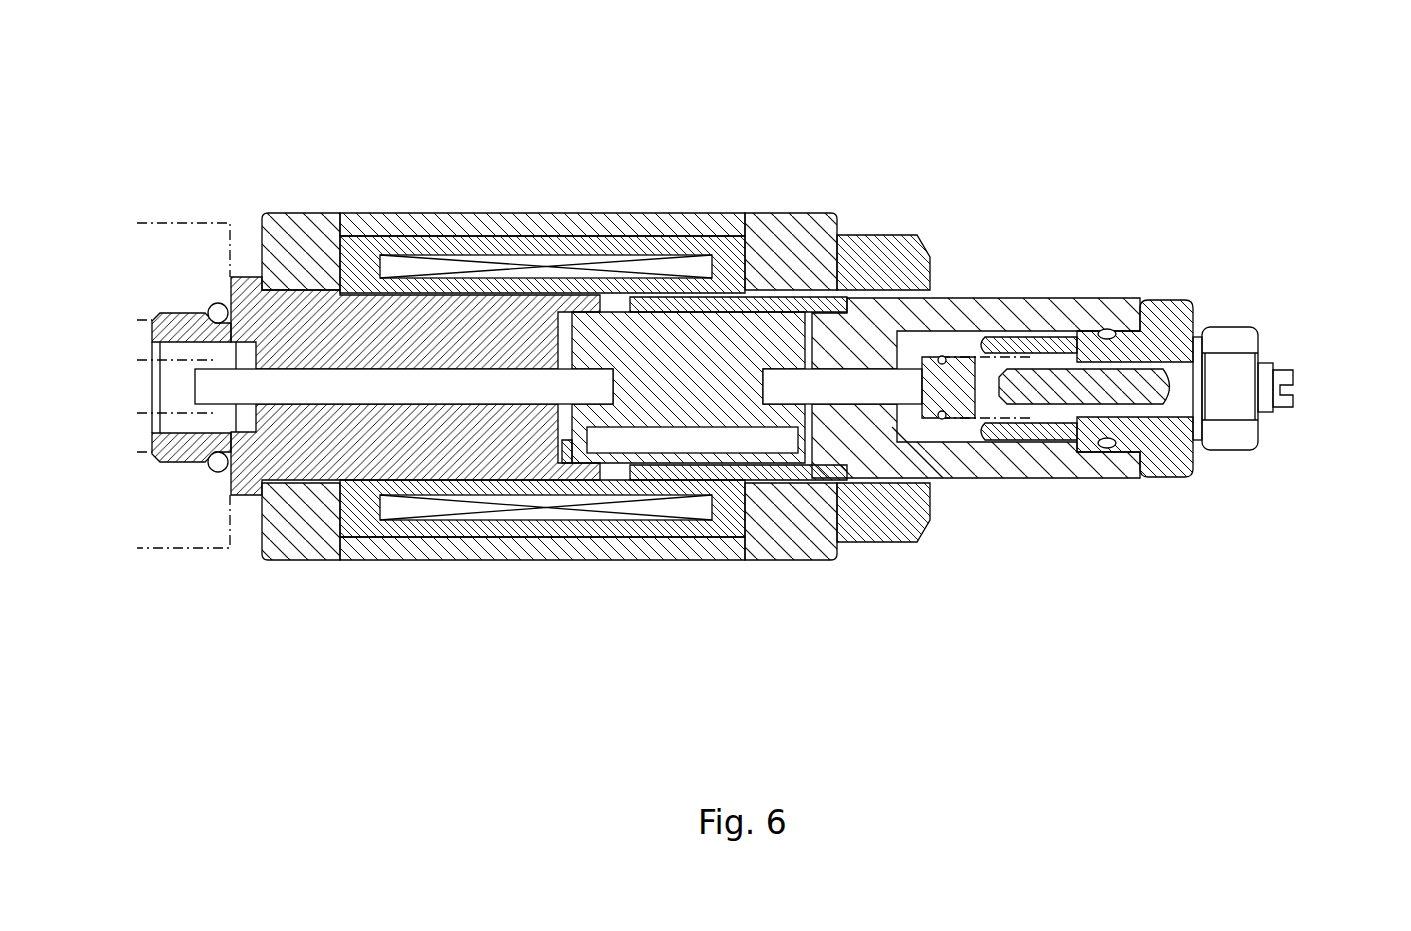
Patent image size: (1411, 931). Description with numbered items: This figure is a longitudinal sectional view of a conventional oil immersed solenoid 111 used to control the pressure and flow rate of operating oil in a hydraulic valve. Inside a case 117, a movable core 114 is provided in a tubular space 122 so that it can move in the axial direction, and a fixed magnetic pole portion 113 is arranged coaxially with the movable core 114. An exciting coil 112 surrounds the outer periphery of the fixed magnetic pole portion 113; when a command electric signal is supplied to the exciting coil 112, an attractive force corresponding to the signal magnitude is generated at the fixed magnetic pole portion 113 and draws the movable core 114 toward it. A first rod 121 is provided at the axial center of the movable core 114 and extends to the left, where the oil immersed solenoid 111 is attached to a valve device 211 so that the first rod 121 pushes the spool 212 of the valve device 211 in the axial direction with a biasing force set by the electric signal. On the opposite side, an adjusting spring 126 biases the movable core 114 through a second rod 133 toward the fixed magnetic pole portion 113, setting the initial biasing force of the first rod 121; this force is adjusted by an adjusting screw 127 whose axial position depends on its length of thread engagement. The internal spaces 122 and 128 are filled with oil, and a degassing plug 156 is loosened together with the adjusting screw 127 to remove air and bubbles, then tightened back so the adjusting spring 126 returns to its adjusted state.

The oil immersed solenoid 111 is at (779, 128).
The exciting coil 112 is at (665, 265).
The fixed magnetic pole portion 113 is at (374, 318).
The movable core 114 is at (783, 348).
The case 117 is at (515, 223).
The first rod 121 is at (315, 398).
The tubular space 122 is at (565, 452).
The adjusting spring 126 is at (962, 350).
The adjusting screw 127 is at (1181, 385).
The internal space 128 is at (970, 430).
The second rod 133 is at (808, 398).
The degassing plug 156 is at (1157, 300).
The valve device 211 is at (150, 222).
The spool 212 is at (142, 357).